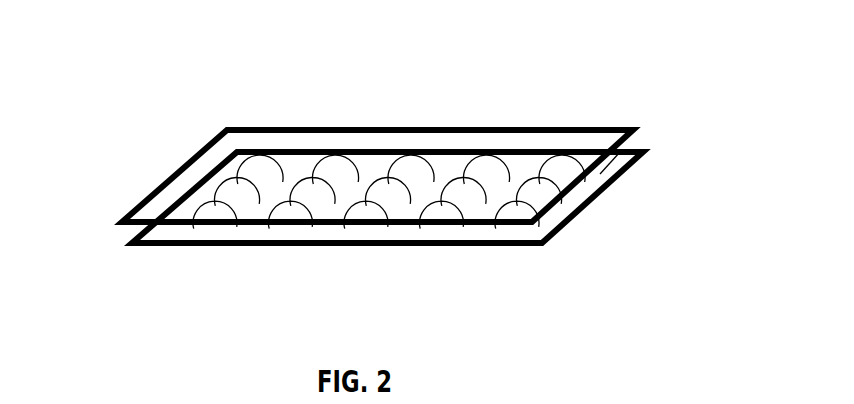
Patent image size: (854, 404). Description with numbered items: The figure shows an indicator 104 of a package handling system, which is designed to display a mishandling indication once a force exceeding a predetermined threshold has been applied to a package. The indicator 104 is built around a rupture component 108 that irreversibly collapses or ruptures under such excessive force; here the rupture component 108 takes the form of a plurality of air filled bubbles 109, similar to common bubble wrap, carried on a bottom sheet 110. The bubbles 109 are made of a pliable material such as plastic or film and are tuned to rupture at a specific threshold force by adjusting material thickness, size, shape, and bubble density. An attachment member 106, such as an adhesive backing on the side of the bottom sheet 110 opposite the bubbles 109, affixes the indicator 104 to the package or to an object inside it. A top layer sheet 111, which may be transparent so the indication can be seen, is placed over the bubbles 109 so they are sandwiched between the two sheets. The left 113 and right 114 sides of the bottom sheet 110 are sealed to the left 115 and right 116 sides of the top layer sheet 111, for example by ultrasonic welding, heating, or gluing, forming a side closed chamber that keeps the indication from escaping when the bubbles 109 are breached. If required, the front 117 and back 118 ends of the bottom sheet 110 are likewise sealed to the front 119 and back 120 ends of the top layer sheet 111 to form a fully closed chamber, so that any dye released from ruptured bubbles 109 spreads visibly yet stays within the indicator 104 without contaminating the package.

The indicator 104 is at (636, 134).
The attachment member 106 is at (167, 247).
The rupture component 108 is at (330, 167).
The bubbles 109 is at (403, 172).
The bottom sheet 110 is at (240, 245).
The top layer sheet 111 is at (253, 128).
The left side of bottom layer sheet 113 is at (390, 247).
The right side of bottom layer sheet 114 is at (567, 150).
The left side of top layer sheet 115 is at (330, 223).
The right side of top layer sheet 116 is at (532, 130).
The front end of bottom layer sheet 117 is at (197, 183).
The back end of bottom layer sheet 118 is at (571, 218).
The front end of top layer sheet 119 is at (202, 152).
The back end of top layer sheet 120 is at (557, 185).